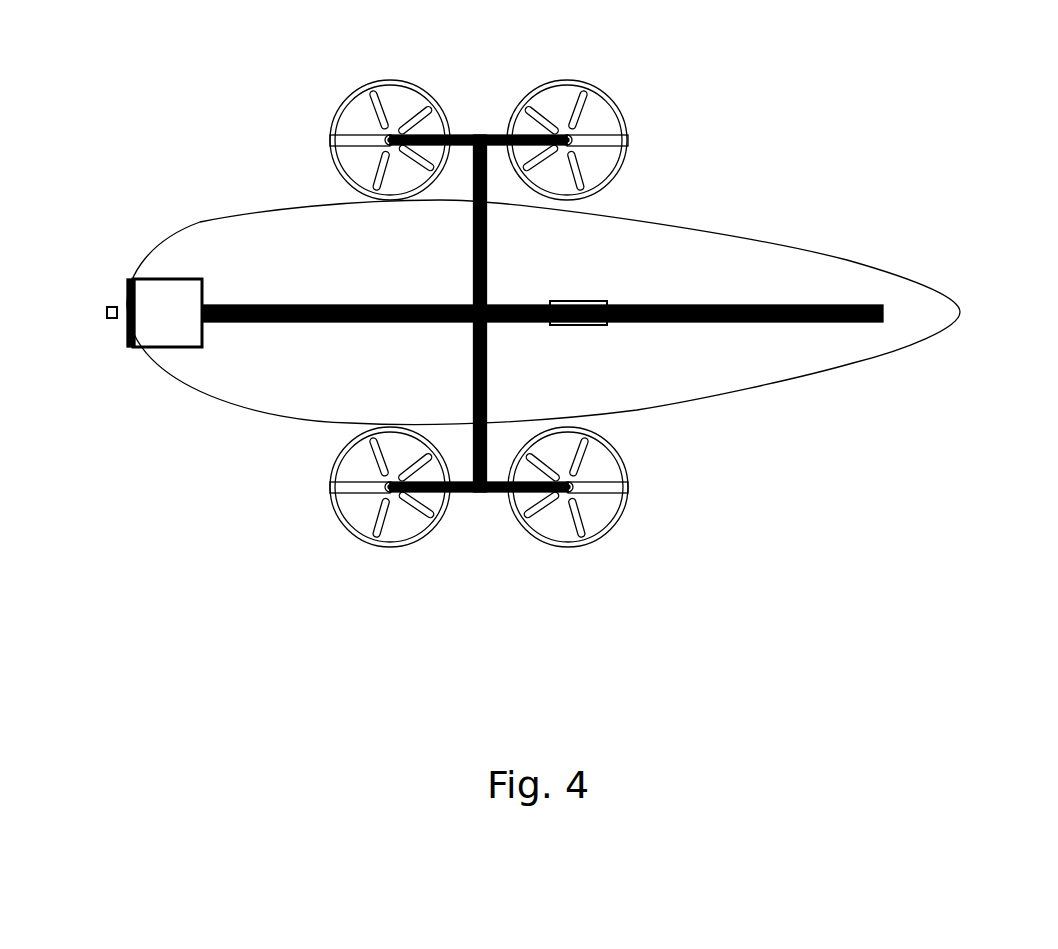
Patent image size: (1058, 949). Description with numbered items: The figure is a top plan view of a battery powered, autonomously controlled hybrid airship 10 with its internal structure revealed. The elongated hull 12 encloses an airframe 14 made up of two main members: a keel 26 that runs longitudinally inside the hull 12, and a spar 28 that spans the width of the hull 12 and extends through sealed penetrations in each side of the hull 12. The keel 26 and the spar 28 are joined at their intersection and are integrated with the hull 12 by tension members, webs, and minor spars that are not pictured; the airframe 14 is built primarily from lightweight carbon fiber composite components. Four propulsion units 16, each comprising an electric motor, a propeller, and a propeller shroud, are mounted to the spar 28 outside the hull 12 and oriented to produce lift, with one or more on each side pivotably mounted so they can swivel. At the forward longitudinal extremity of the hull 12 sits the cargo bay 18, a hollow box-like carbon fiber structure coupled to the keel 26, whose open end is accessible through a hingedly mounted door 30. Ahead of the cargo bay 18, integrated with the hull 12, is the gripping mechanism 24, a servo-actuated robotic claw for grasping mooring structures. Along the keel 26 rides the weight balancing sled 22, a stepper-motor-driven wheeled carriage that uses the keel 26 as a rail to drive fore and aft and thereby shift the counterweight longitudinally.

The hybrid airship 10 is at (501, 317).
The hull 12 is at (250, 232).
The airframe 14 is at (482, 497).
The propulsion unit 16 is at (385, 80).
The cargo bay 18 is at (148, 282).
The weight balancing sled 22 is at (580, 325).
The gripping mechanism 24 is at (111, 318).
The keel 26 is at (740, 323).
The spar 28 is at (473, 362).
The door 30 is at (127, 292).